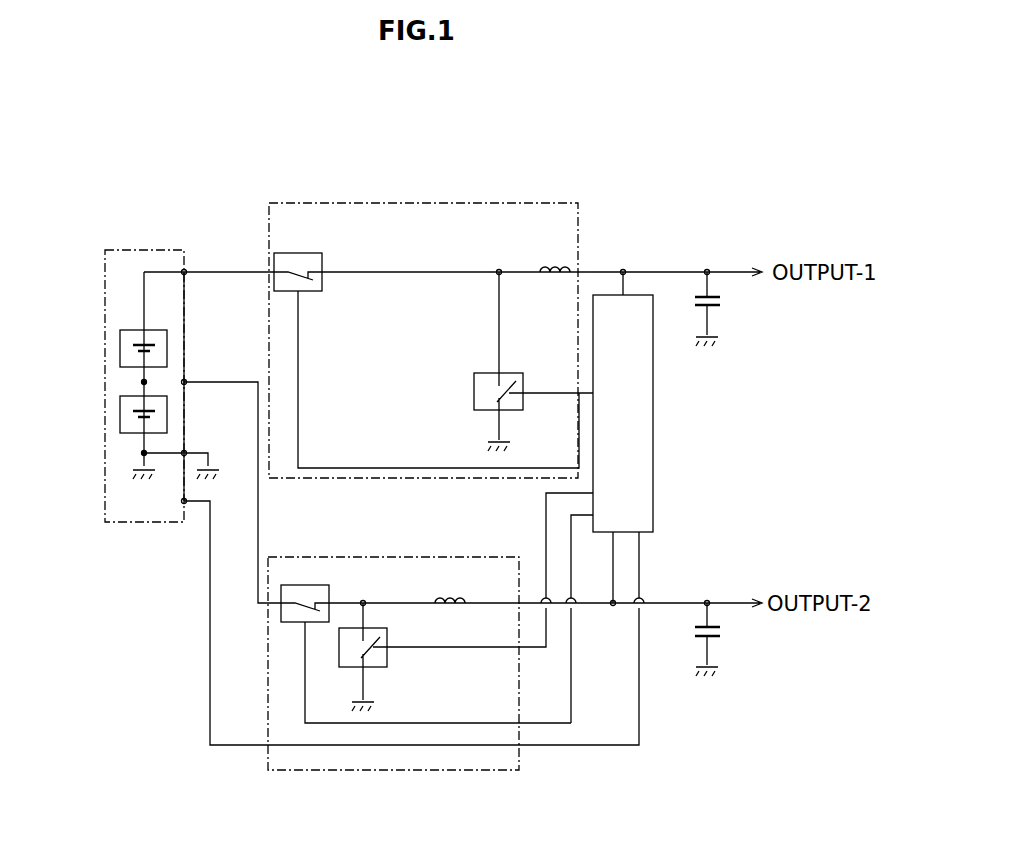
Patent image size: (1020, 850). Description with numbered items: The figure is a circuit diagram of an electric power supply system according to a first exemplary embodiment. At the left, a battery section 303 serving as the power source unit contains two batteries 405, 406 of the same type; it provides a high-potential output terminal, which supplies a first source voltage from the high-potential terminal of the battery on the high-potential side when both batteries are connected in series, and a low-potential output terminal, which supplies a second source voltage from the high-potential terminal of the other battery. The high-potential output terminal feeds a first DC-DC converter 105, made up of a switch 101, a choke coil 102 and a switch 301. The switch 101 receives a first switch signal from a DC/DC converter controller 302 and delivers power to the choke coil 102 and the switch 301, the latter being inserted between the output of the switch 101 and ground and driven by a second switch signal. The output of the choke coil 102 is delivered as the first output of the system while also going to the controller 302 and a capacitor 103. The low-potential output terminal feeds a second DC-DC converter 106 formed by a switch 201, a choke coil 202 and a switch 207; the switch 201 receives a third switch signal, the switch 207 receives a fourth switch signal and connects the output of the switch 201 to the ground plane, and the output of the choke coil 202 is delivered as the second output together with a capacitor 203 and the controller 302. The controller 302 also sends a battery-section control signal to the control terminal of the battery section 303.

The switch 101 is at (320, 254).
The choke coil 102 is at (541, 264).
The capacitor 103 is at (725, 300).
The first DC-DC converter 105 is at (580, 216).
The second DC-DC converter 106 is at (520, 760).
The switch 201 is at (317, 585).
The choke coil 202 is at (463, 600).
The capacitor 203 is at (725, 632).
The switch 207 is at (390, 660).
The switch 301 is at (478, 414).
The DC/DC converter controller 302 is at (655, 523).
The battery section 303 is at (130, 522).
The battery 405 is at (120, 348).
The battery 406 is at (120, 412).